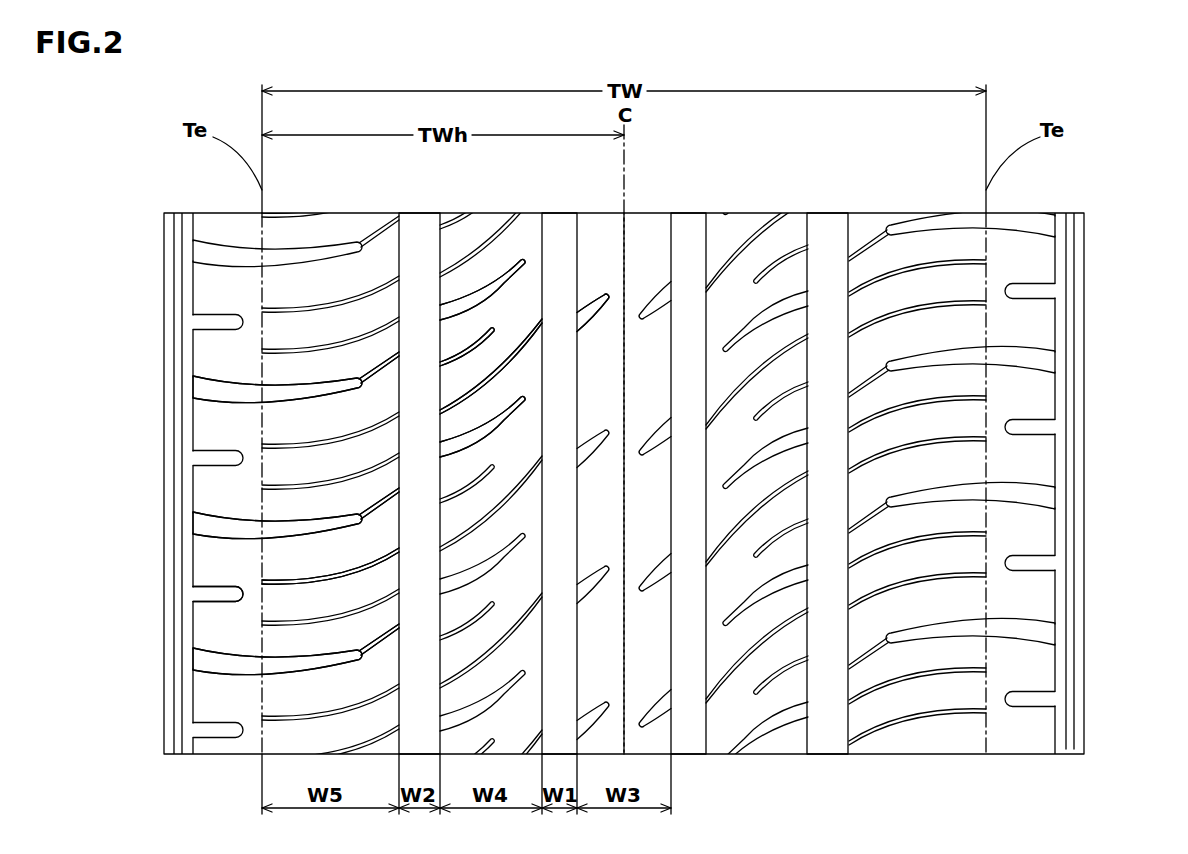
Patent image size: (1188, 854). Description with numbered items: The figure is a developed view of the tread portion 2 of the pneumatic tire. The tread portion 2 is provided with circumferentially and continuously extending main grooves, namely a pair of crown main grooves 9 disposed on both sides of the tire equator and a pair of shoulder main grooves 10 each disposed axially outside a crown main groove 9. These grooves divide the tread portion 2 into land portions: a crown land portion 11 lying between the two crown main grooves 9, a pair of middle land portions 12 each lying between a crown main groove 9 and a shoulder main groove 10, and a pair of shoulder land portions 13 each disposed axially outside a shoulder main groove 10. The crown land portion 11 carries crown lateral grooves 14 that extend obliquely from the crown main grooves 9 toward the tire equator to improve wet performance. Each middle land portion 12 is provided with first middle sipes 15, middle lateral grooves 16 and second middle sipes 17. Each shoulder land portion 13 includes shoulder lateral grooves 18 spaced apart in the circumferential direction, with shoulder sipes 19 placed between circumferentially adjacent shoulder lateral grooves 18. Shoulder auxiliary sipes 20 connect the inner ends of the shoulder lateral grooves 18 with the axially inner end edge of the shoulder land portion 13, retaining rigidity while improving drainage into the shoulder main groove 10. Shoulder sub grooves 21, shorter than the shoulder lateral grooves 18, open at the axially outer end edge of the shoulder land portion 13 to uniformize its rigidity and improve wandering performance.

The tread portion 2 is at (842, 152).
The crown main groove 9 is at (560, 242).
The shoulder main groove 10 is at (428, 242).
The crown land portion 11 is at (638, 245).
The middle land portion 12 is at (515, 242).
The shoulder land portion 13 is at (338, 242).
The crown lateral groove 14 is at (594, 296).
The first middle sipe 15 is at (472, 342).
The middle lateral groove 16 is at (472, 383).
The second middle sipe 17 is at (480, 302).
The shoulder lateral groove 18 is at (285, 667).
The shoulder sipe 19 is at (335, 575).
The shoulder auxiliary sipe 20 is at (372, 660).
The shoulder sub groove 21 is at (232, 594).